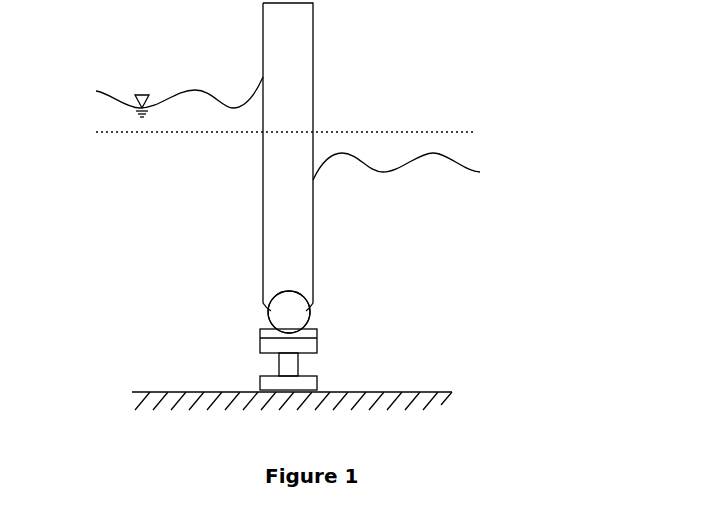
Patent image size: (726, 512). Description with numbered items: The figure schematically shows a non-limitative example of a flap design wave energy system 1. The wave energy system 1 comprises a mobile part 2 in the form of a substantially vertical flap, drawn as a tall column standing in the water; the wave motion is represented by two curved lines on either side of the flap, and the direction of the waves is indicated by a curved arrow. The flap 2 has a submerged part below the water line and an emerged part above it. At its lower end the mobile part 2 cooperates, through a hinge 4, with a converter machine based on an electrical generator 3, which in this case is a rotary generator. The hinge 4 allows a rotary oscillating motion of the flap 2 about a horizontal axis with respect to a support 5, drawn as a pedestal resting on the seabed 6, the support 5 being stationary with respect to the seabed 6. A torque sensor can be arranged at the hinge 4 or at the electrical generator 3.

The wave energy system 1 is at (172, 193).
The mobile part 2 is at (313, 80).
The electrical generator 3 is at (253, 313).
The hinge 4 is at (318, 312).
The support 5 is at (318, 363).
The seabed 6 is at (430, 385).